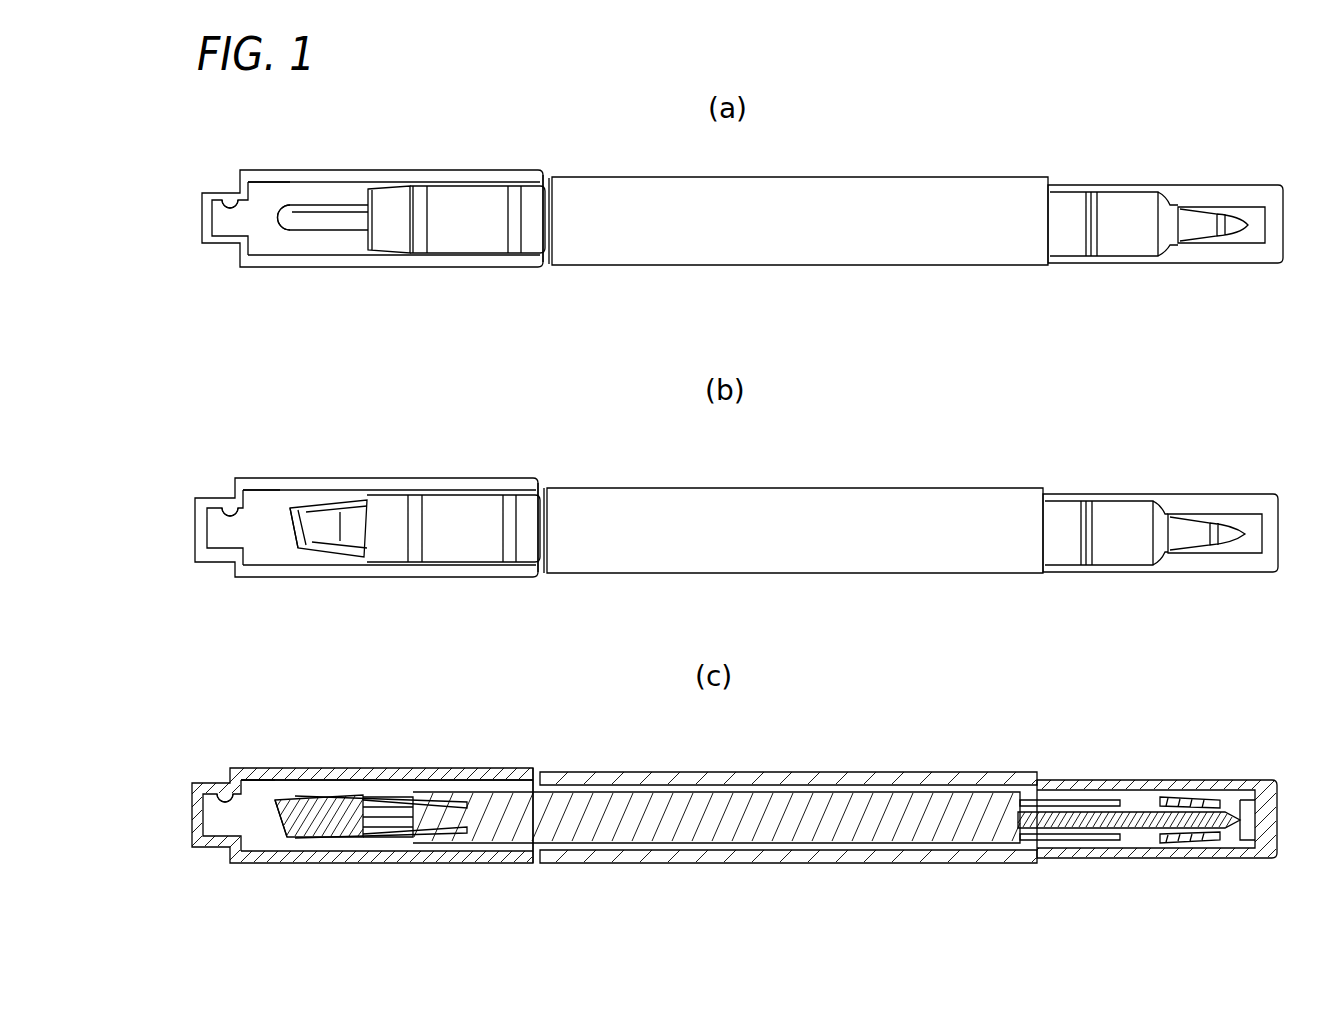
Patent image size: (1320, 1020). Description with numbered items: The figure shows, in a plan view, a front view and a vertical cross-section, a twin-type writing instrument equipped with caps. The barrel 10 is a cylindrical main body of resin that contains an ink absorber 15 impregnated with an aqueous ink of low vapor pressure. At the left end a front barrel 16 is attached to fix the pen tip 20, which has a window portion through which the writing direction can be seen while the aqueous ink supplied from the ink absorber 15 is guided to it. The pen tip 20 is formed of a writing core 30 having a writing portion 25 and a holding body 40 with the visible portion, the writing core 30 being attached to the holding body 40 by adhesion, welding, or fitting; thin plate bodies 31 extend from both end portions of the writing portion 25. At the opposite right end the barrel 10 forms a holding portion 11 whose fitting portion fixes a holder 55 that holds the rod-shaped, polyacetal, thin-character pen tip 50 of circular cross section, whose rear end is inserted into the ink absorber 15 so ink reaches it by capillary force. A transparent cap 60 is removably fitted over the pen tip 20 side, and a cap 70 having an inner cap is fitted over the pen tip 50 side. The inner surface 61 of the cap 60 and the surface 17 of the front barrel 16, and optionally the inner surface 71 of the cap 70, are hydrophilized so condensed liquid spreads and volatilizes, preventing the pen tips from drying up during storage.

The barrel 10 is at (750, 210).
The holding portion 11 is at (1098, 800).
The ink absorber 15 is at (905, 805).
The front barrel 16 is at (553, 178).
The surface of the front barrel 17 is at (395, 770).
The pen tip 20 is at (317, 243).
The writing portion 25 is at (283, 222).
The writing core 30 is at (350, 233).
The thin plate bodies 31 is at (470, 772).
The holding body 40 is at (291, 187).
The pen tip 50 is at (1219, 214).
The holder 55 is at (1180, 845).
The cap 60 is at (333, 178).
The inner surface of the cap 61 is at (232, 205).
The cap 70 is at (1171, 193).
The inner surface of the cap 71 is at (1238, 232).